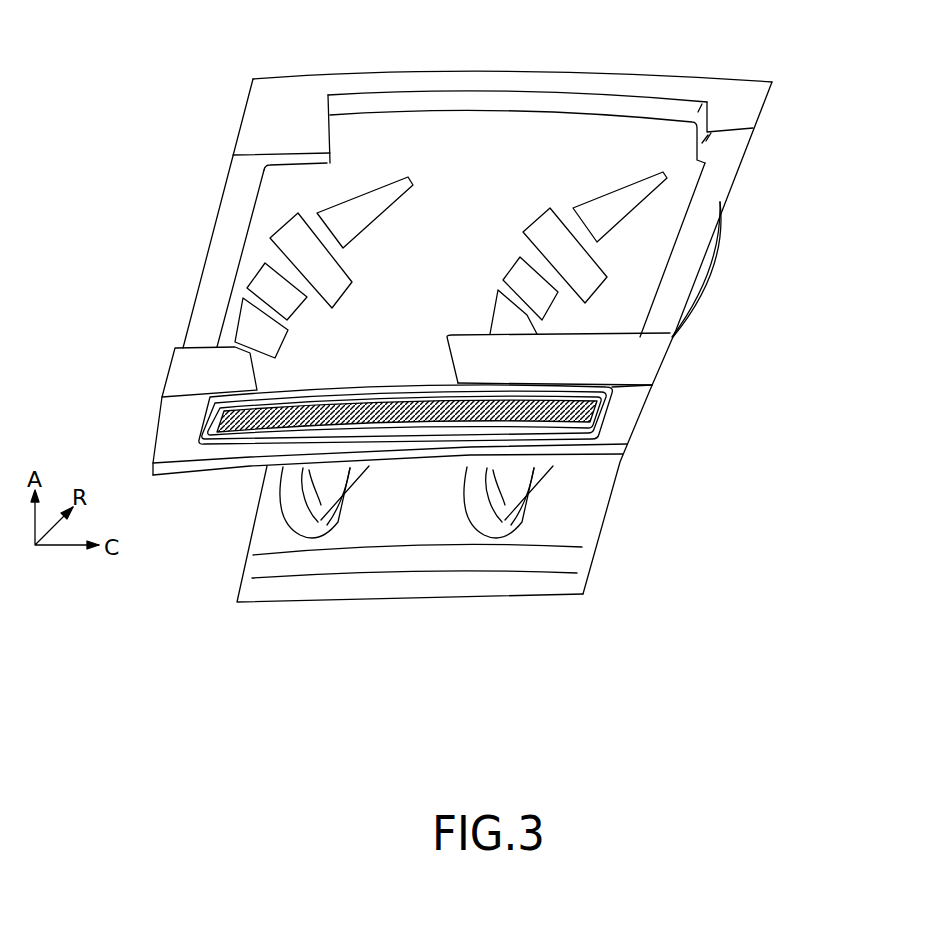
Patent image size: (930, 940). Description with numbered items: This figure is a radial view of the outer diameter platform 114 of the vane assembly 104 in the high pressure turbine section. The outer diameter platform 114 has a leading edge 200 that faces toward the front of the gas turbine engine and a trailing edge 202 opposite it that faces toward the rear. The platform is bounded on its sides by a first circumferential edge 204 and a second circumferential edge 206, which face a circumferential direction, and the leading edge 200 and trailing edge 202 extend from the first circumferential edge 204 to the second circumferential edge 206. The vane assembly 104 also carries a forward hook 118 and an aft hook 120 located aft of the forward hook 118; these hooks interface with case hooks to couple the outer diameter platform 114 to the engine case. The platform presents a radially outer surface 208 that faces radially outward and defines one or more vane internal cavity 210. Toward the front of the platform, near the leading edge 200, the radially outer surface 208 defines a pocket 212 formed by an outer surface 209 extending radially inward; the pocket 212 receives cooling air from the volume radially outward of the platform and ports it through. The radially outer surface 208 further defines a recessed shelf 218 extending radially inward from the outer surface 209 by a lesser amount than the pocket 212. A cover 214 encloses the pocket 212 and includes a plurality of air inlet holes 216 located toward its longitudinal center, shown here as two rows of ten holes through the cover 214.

The vane assembly 104 is at (136, 135).
The outer diameter platform 114 is at (745, 183).
The forward hook 118 is at (648, 358).
The aft hook 120 is at (740, 122).
The leading edge 200 is at (217, 473).
The trailing edge 202 is at (297, 77).
The first circumferential edge 204 is at (720, 202).
The second circumferential edge 206 is at (222, 203).
The radially outer surface 208 is at (670, 260).
The outer surface 209 is at (628, 412).
The vane internal cavity 210 is at (556, 190).
The pocket 212 is at (590, 412).
The cover 214 is at (593, 412).
The air inlet holes 216 is at (431, 436).
The recessed shelf 218 is at (590, 430).